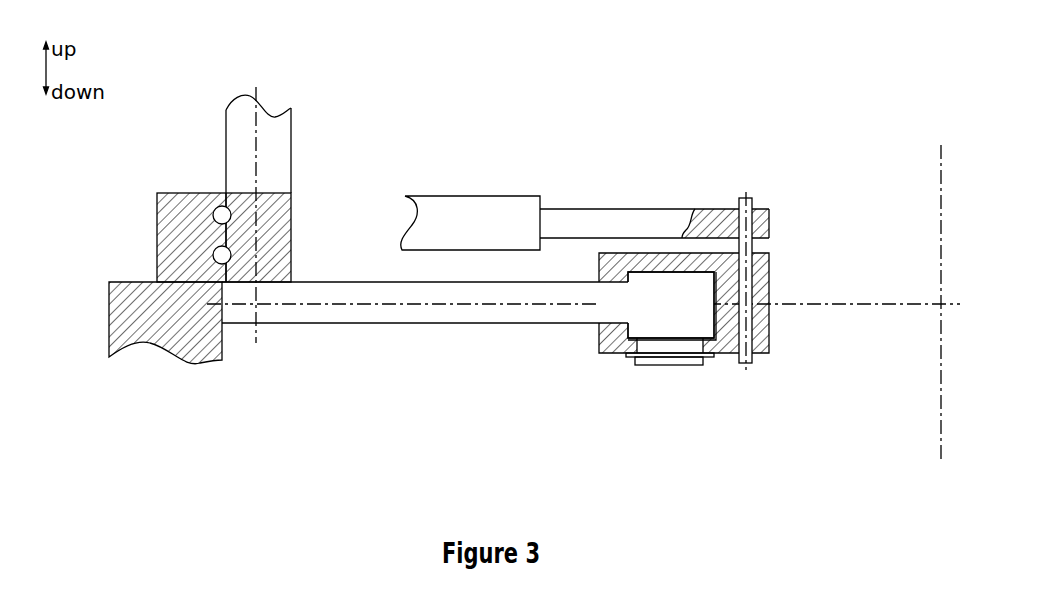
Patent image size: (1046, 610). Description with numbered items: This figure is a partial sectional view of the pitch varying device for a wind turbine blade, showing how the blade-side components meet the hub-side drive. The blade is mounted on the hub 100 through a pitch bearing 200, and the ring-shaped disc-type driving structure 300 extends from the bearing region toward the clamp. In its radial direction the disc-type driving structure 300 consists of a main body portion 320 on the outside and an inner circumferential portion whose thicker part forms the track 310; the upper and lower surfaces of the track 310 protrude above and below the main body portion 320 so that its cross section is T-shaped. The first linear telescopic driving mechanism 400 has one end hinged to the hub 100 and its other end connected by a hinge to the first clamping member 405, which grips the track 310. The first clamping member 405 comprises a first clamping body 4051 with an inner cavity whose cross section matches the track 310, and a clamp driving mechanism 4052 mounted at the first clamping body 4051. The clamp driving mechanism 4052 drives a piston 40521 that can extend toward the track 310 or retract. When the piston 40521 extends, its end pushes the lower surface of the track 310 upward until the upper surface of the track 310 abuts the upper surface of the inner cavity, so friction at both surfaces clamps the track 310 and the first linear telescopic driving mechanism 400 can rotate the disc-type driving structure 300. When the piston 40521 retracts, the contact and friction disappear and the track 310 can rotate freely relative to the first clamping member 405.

The hub 100 is at (202, 335).
The pitch bearing 200 is at (202, 208).
The disc-type driving structure 300 is at (468, 337).
The track 310 is at (647, 313).
The main body portion 320 is at (443, 315).
The first linear telescopic driving mechanism 400 is at (710, 222).
The first clamping member 405 is at (761, 307).
The first clamping body 4051 is at (762, 340).
The clamp driving mechanism 4052 is at (730, 380).
The piston 40521 is at (689, 338).